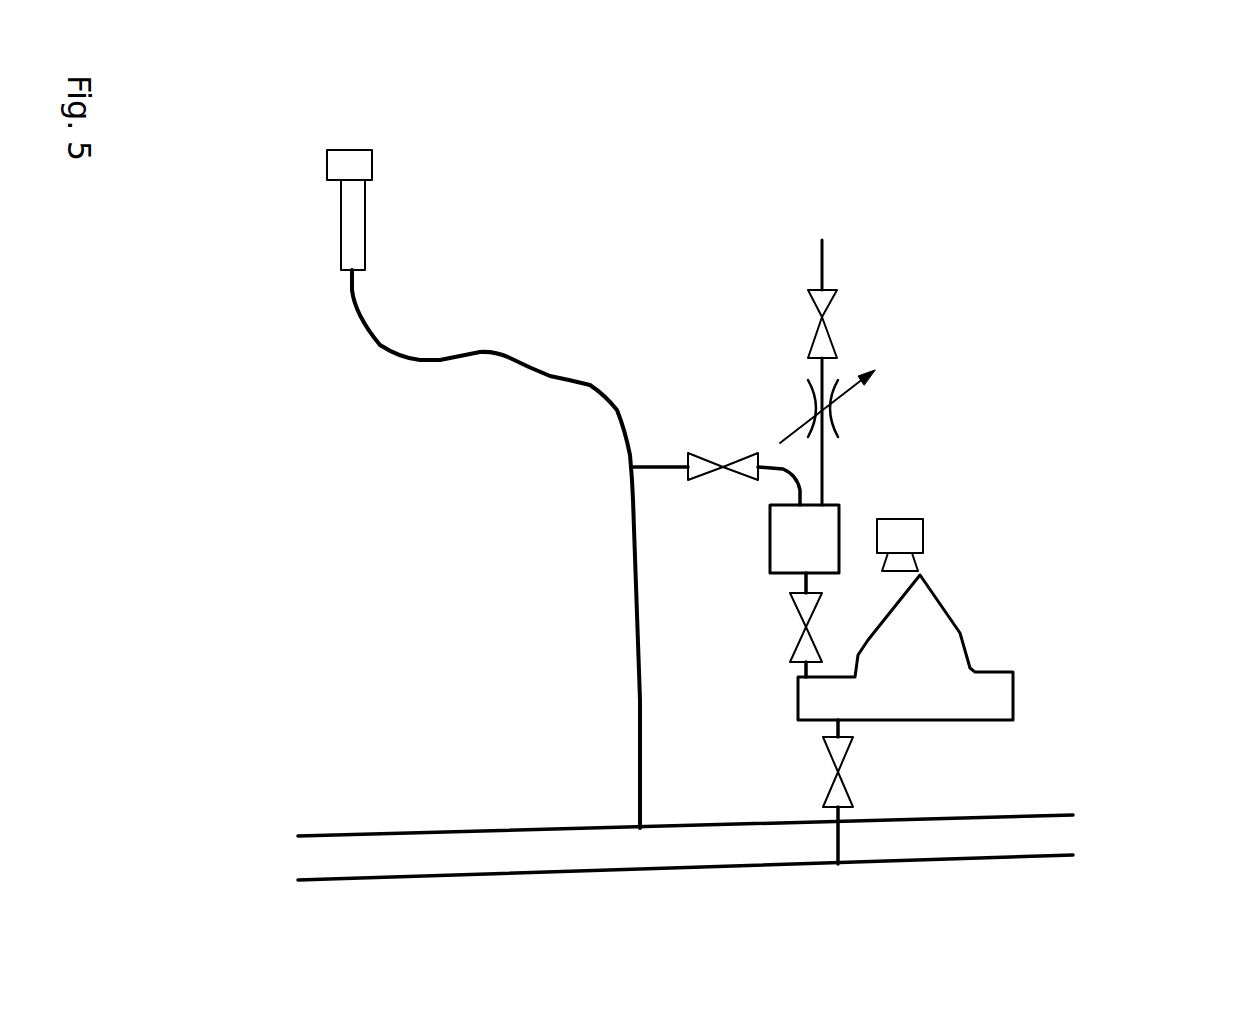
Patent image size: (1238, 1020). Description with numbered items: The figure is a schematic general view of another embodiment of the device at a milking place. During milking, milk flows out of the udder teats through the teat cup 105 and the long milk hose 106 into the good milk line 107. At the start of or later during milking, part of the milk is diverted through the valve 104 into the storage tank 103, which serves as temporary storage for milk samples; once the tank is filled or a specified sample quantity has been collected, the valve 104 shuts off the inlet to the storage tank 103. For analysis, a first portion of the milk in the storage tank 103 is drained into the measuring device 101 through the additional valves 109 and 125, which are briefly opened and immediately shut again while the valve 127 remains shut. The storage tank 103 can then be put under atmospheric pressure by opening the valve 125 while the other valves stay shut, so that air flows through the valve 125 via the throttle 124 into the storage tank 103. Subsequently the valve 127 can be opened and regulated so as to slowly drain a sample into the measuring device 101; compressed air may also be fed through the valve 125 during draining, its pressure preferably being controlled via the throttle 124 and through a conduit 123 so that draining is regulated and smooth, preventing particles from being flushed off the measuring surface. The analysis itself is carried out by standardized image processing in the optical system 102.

The measuring device 101 is at (1006, 591).
The optical system 102 is at (1000, 470).
The storage tank 103 is at (901, 462).
The valve 104 is at (680, 377).
The teat cup 105 is at (464, 201).
The long milk hose 106 is at (446, 549).
The good milk line 107 is at (668, 764).
The valve 109 is at (662, 594).
The conduit 123 is at (936, 346).
The throttle 124 is at (918, 233).
The valve 125 is at (725, 280).
The valve 127 is at (1017, 717).